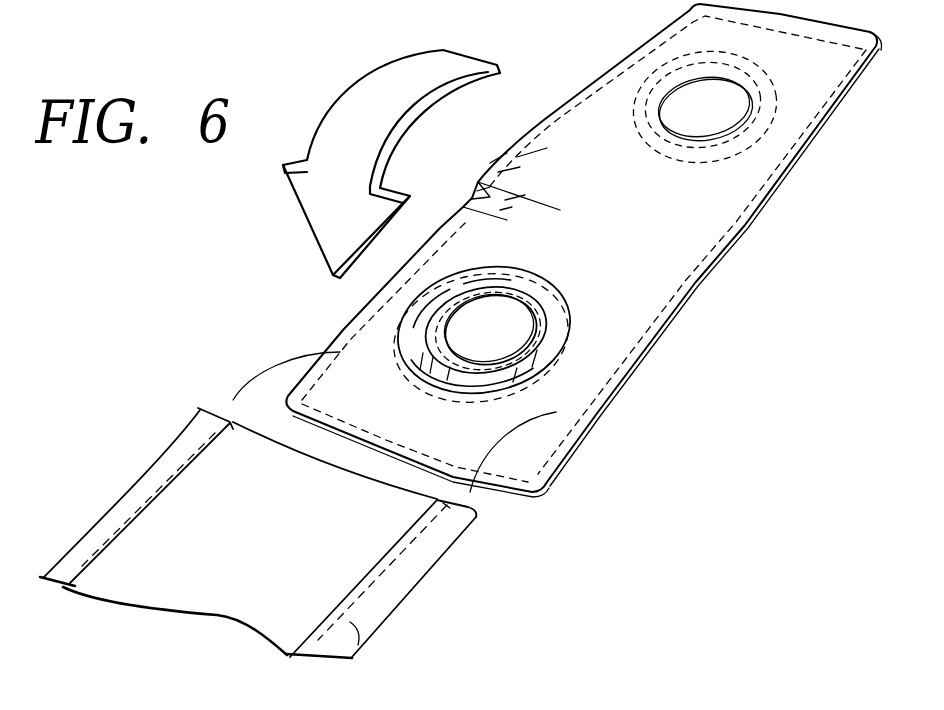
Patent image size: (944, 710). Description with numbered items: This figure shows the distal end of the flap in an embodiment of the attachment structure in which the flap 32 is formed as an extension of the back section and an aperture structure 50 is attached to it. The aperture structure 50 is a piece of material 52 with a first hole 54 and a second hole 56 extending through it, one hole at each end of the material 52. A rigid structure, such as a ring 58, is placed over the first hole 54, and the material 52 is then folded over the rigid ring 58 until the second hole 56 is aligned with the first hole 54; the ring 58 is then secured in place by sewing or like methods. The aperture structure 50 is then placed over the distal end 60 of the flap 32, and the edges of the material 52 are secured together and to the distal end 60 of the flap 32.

The flap 32 is at (147, 535).
The aperture structure 50 is at (585, 250).
The material 52 is at (780, 152).
The first hole 54 is at (540, 334).
The second hole 56 is at (746, 44).
The rigid ring 58 is at (513, 366).
The distal end 60 is at (403, 512).